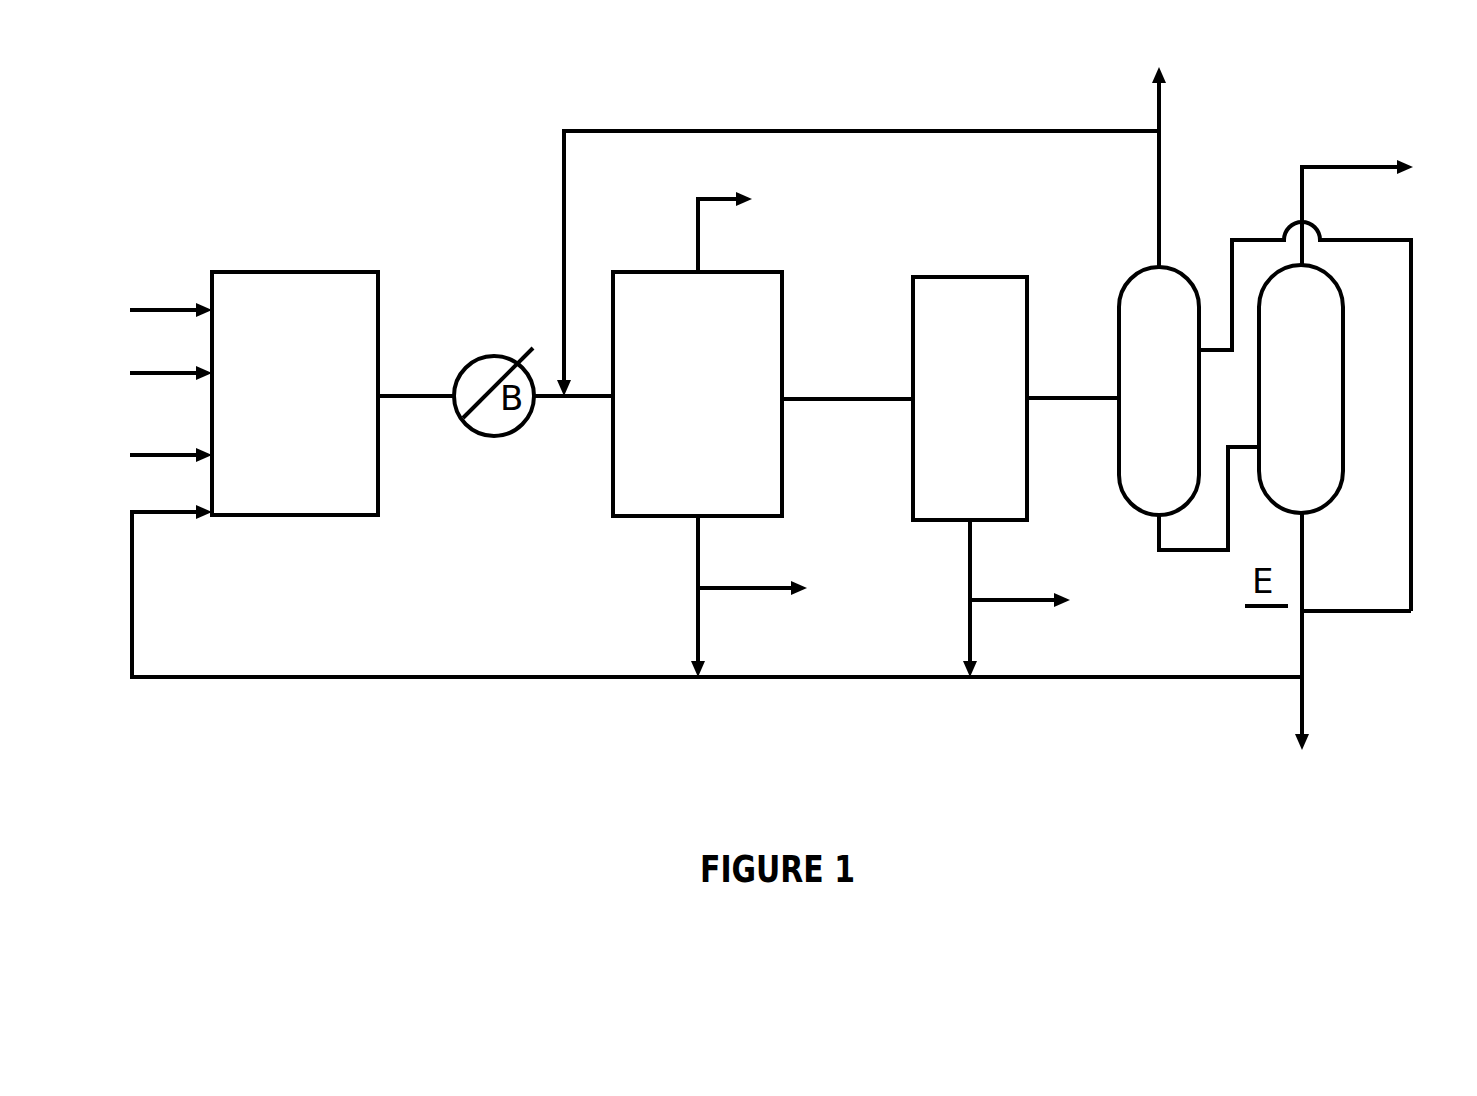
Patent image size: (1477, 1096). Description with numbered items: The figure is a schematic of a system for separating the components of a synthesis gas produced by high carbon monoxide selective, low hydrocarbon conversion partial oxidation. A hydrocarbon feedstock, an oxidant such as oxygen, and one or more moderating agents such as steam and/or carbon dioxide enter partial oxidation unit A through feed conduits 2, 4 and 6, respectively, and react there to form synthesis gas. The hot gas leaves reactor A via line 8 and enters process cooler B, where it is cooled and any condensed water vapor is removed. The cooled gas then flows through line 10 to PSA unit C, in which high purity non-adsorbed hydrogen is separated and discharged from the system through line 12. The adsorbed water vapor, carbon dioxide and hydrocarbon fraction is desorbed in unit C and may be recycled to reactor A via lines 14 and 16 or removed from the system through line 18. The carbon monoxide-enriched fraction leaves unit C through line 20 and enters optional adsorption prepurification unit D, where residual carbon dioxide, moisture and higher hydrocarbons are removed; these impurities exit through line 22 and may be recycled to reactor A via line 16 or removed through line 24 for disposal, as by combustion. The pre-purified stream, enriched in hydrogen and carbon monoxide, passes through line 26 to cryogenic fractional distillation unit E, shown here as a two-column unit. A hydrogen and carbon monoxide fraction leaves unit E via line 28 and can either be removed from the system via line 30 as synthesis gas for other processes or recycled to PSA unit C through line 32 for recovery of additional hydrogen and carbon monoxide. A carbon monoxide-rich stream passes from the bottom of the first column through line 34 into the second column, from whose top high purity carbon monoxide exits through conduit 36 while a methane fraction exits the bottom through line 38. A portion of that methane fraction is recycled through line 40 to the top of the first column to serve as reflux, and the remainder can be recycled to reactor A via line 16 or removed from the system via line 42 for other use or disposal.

The feed conduit 2 is at (163, 306).
The feed conduit 4 is at (165, 368).
The feed conduit 6 is at (167, 451).
The line 8 is at (378, 292).
The line 10 is at (590, 398).
The line 12 is at (698, 235).
The line 14 is at (695, 567).
The line 16 is at (422, 676).
The line 18 is at (750, 590).
The line 20 is at (840, 401).
The line 22 is at (967, 572).
The line 24 is at (1018, 603).
The line 26 is at (1078, 397).
The line 28 is at (1160, 200).
The line 30 is at (1160, 102).
The line 32 is at (887, 131).
The line 34 is at (1197, 552).
The conduit 36 is at (1345, 165).
The line 38 is at (1355, 603).
The line 40 is at (1407, 410).
The line 42 is at (1298, 690).